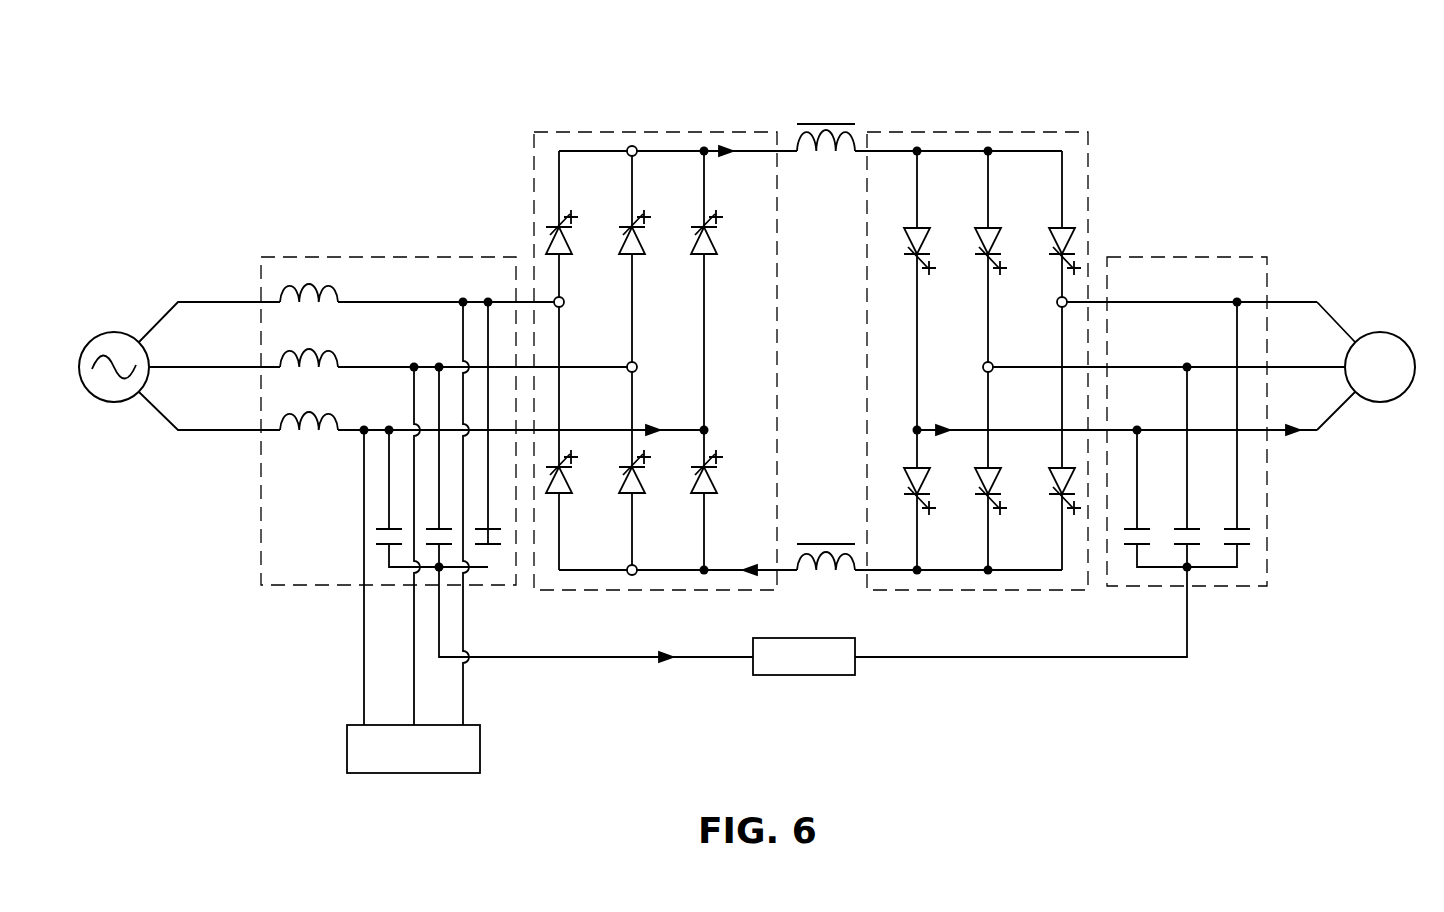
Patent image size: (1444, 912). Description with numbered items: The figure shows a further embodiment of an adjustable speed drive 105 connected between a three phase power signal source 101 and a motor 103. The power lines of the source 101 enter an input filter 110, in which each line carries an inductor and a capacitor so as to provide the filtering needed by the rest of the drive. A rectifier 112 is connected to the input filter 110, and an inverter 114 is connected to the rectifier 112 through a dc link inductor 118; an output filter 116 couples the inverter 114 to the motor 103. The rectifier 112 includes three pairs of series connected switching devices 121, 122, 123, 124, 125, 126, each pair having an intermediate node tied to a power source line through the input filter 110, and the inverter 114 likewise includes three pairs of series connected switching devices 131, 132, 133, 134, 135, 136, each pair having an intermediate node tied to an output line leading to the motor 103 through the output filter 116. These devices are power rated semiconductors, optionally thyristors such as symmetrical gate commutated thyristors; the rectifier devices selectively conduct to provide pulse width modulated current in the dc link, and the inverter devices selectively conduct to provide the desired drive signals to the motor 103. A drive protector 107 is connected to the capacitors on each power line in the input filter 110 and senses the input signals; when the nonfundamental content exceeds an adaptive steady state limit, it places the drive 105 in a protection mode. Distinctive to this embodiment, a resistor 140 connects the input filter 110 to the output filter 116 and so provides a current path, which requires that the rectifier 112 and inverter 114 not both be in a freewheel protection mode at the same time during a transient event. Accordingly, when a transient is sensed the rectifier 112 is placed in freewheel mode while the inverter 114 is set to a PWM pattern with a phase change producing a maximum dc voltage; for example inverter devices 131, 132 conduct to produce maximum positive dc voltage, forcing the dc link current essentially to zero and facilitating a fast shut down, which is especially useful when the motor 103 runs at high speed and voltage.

The power signal source 101 is at (115, 332).
The motor 103 is at (1381, 332).
The adjustable speed drive 105 is at (368, 118).
The drive protector 107 is at (413, 774).
The input filter 110 is at (401, 256).
The rectifier 112 is at (641, 130).
The inverter 114 is at (975, 130).
The output filter 116 is at (1187, 256).
The dc link inductor 118 is at (828, 116).
The rectifier switching device 121 is at (563, 256).
The rectifier switching device 122 is at (563, 495).
The rectifier switching device 123 is at (636, 256).
The rectifier switching device 124 is at (636, 495).
The rectifier switching device 125 is at (708, 256).
The rectifier switching device 126 is at (708, 495).
The inverter switching device 131 is at (911, 246).
The inverter switching device 132 is at (909, 486).
The inverter switching device 133 is at (982, 246).
The inverter switching device 134 is at (980, 486).
The inverter switching device 135 is at (1056, 246).
The inverter switching device 136 is at (1054, 486).
The resistor 140 is at (803, 637).